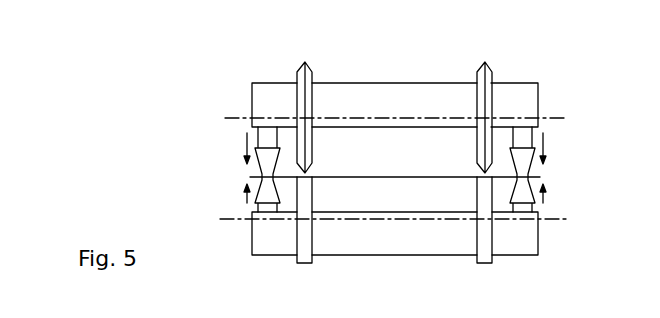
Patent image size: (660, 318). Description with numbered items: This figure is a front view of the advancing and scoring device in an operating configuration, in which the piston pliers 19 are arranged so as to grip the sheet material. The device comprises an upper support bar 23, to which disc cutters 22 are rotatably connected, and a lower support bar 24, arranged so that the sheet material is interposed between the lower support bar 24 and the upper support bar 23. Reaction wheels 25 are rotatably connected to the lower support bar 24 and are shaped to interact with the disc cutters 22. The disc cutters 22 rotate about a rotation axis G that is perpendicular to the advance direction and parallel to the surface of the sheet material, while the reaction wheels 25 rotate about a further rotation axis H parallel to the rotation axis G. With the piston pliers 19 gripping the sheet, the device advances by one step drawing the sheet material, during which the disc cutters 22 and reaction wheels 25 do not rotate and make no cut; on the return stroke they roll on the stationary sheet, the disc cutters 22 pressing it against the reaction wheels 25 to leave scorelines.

The piston pliers 19 is at (228, 172).
The disc cutters 22 is at (297, 78).
The upper support bar 23 is at (423, 90).
The lower support bar 24 is at (415, 243).
The reaction wheels 25 is at (305, 243).
The rotation axis G is at (567, 117).
The further rotation axis H is at (552, 218).